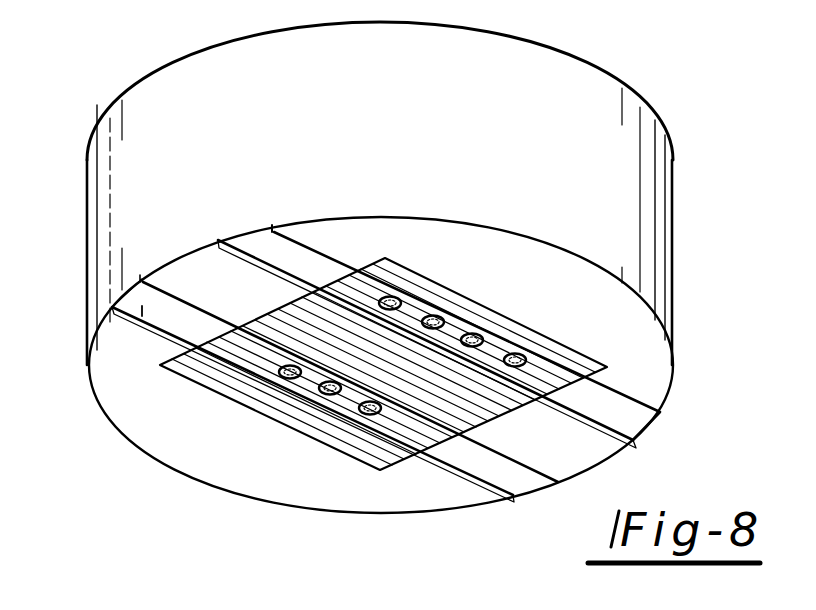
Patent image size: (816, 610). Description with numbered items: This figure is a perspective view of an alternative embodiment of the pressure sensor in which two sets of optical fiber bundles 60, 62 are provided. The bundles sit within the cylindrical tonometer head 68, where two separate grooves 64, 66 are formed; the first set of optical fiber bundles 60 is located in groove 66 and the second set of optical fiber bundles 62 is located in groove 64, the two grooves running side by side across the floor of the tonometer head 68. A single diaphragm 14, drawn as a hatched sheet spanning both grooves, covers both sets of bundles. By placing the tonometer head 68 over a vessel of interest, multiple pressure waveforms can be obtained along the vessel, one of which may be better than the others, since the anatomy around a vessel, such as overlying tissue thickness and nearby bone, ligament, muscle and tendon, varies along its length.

The diaphragm 14 is at (238, 393).
The optical fiber bundles 60 is at (401, 297).
The optical fiber bundles 62 is at (292, 380).
The groove 64 is at (141, 316).
The groove 66 is at (272, 227).
The tonometer head 68 is at (152, 240).